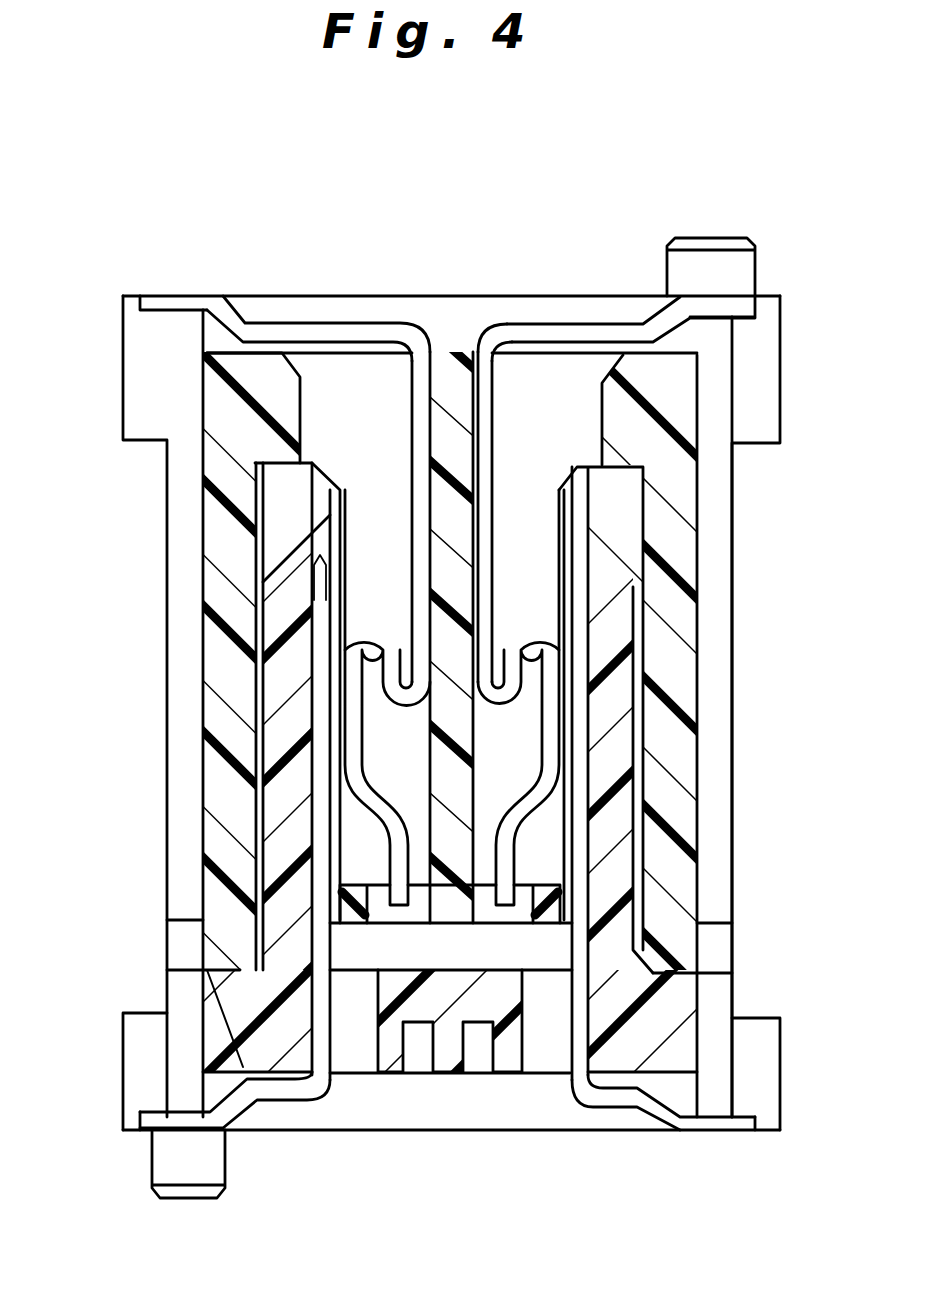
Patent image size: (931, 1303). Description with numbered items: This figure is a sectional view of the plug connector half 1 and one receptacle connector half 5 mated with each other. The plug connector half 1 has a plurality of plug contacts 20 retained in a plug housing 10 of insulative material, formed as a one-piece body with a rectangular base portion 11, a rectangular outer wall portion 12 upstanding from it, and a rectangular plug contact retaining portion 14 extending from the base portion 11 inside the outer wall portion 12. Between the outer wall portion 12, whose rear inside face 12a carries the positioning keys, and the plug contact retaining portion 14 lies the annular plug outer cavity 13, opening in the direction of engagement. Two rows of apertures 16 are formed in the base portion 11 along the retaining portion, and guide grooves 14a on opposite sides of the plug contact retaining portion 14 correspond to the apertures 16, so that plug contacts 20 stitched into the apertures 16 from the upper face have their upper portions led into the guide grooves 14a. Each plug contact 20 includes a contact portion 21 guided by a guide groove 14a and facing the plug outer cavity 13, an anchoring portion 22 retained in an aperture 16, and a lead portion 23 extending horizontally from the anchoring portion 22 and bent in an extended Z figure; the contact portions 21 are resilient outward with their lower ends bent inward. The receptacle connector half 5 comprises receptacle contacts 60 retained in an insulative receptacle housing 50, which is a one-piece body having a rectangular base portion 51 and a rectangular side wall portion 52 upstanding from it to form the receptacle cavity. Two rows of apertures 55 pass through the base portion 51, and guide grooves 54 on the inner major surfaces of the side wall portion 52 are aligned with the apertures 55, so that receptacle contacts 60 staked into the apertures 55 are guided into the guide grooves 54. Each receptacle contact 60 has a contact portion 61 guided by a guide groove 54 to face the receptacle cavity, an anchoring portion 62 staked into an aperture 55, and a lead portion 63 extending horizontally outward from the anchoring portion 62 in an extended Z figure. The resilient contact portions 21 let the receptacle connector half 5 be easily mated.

The plug connector half 1 is at (576, 238).
The receptacle connector half 5 is at (122, 973).
The plug housing 10 is at (752, 519).
The base portion 11 is at (333, 293).
The outer wall portion 12 is at (700, 648).
The rear inside face 12a is at (683, 622).
The plug outer cavity 13 is at (630, 526).
The plug contact retaining portion 14 is at (560, 910).
The guide grooves 14a is at (543, 867).
The apertures 16 is at (489, 352).
The plug contacts 20 is at (505, 456).
The contact portion 21 is at (560, 810).
The anchoring portion 22 is at (493, 410).
The lead portion 23 is at (683, 298).
The receptacle housing 50 is at (276, 796).
The base portion 51 is at (215, 985).
The side wall portion 52 is at (282, 613).
The guide grooves 54 is at (313, 675).
The apertures 55 is at (310, 1097).
The receptacle contacts 60 is at (340, 582).
The contact portion 61 is at (320, 593).
The anchoring portion 62 is at (320, 1003).
The lead portion 63 is at (143, 1135).